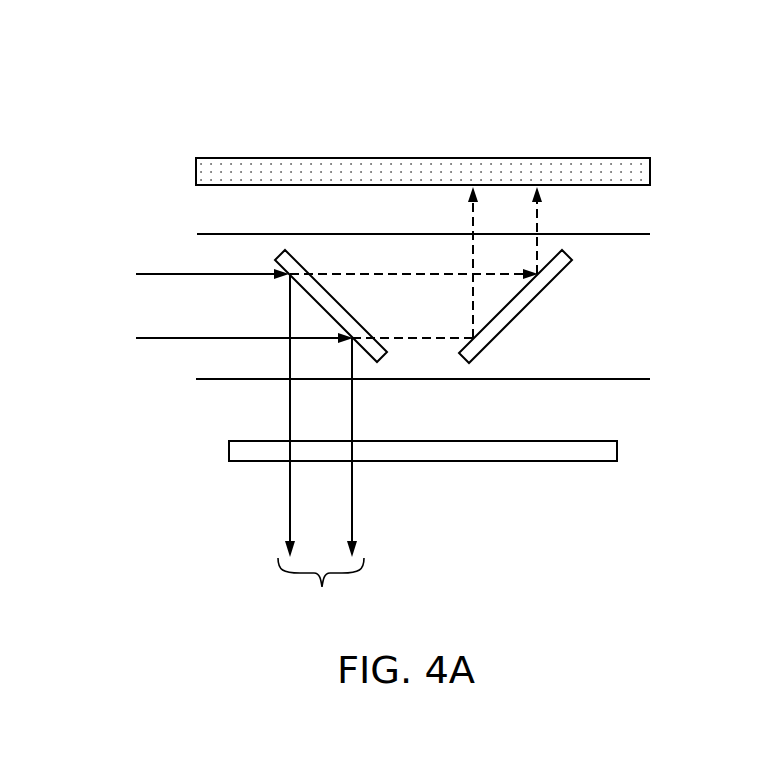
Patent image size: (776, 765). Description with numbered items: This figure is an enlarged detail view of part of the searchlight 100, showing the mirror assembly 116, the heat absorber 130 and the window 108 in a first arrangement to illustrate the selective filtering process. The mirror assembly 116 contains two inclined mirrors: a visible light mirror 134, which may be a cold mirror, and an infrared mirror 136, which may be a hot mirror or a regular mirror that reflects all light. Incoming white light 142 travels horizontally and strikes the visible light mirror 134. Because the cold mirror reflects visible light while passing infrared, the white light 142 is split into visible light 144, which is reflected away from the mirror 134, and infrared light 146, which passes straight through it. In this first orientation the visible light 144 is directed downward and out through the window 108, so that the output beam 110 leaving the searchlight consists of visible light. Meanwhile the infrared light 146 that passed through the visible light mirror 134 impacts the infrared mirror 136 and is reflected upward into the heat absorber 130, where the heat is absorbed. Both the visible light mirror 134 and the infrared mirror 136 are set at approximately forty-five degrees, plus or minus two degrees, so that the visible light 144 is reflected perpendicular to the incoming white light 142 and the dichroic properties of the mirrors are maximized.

The searchlight 100 is at (560, 109).
The window 108 is at (588, 456).
The output beam 110 is at (321, 589).
The mirror assembly 116 is at (676, 231).
The heat absorber 130 is at (383, 165).
The visible light mirror 134 is at (346, 313).
The infrared mirror 136 is at (516, 318).
The white light 142 is at (165, 272).
The visible light 144 is at (288, 515).
The infrared light 146 is at (473, 216).